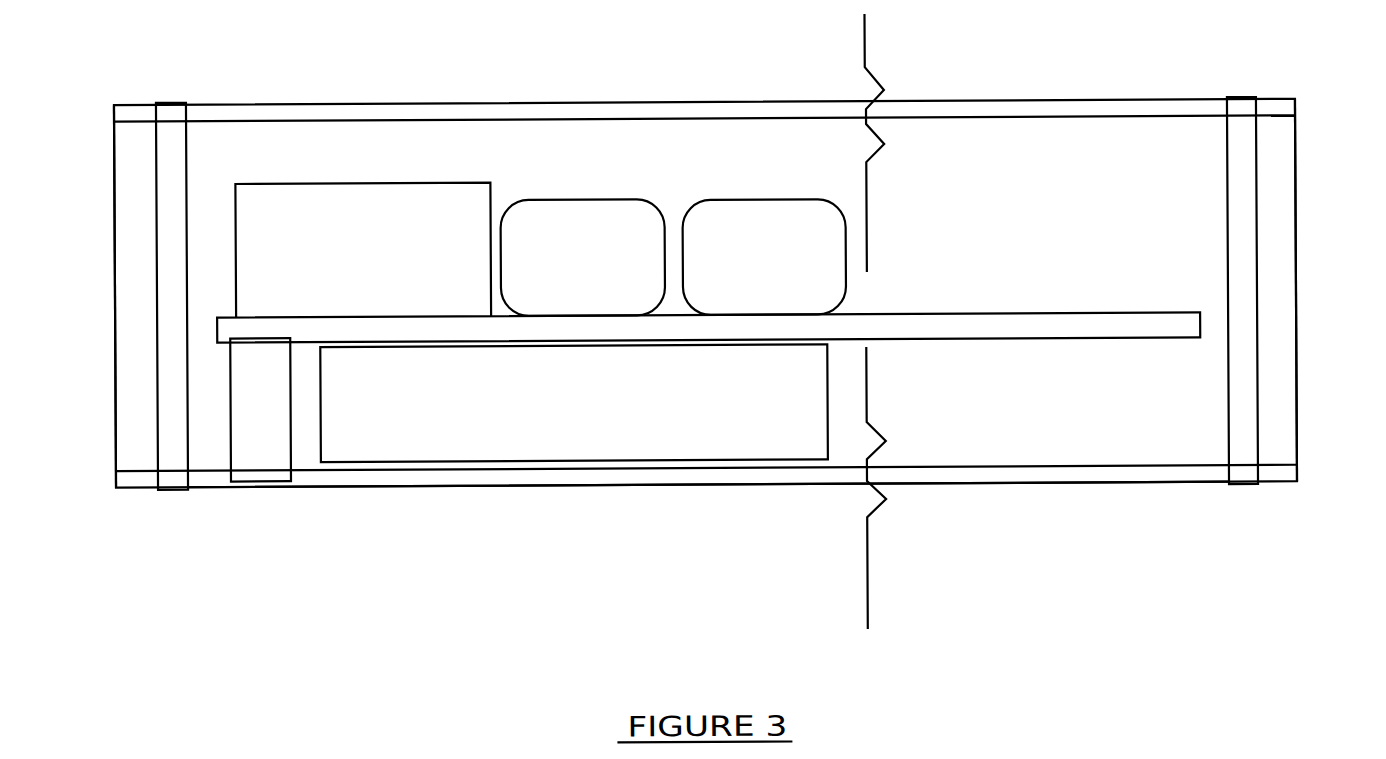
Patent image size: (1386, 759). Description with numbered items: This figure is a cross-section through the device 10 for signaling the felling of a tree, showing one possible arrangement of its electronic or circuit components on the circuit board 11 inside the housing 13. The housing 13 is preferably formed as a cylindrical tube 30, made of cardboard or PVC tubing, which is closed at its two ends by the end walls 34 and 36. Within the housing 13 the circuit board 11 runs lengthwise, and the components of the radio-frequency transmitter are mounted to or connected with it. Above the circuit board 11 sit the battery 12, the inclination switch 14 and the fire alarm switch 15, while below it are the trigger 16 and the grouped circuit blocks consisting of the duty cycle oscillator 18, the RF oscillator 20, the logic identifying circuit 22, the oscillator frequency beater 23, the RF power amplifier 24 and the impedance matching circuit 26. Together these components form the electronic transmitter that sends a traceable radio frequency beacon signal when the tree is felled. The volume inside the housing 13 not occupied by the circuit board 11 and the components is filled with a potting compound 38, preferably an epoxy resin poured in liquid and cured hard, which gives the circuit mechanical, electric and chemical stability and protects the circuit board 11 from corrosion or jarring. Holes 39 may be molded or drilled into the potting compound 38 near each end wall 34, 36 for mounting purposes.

The device for signaling the felling of a tree 10 is at (982, 484).
The circuit board 11 is at (1115, 313).
The battery 12 is at (352, 247).
The housing 13 is at (472, 475).
The inclination switch 14 is at (567, 269).
The fire alarm switch 15 is at (747, 266).
The trigger 16 is at (245, 422).
The duty cycle oscillator 18 is at (574, 403).
The radio frequency oscillator 20 is at (574, 403).
The logic identifying circuit 22 is at (574, 403).
The oscillator frequency beater 23 is at (574, 403).
The RF power amplifier 24 is at (574, 403).
The impedance matching circuit 26 is at (566, 399).
The cylindrical tube 30 is at (585, 486).
The end wall 34 is at (1297, 374).
The end wall 36 is at (115, 344).
The potting compound 38 is at (960, 147).
The holes 39 is at (158, 189).